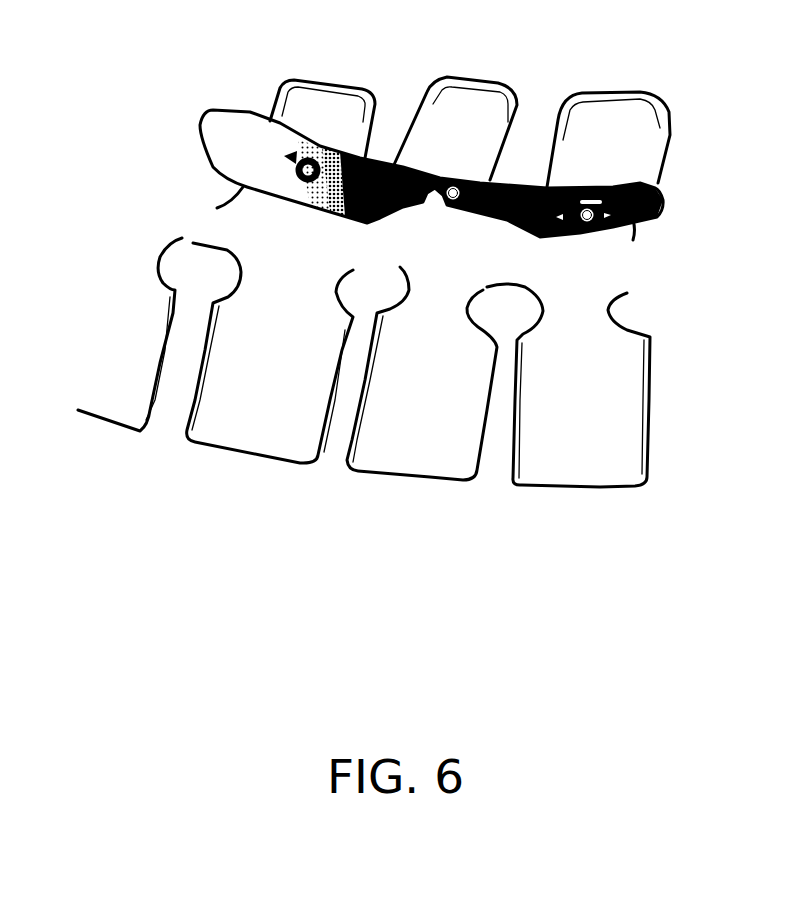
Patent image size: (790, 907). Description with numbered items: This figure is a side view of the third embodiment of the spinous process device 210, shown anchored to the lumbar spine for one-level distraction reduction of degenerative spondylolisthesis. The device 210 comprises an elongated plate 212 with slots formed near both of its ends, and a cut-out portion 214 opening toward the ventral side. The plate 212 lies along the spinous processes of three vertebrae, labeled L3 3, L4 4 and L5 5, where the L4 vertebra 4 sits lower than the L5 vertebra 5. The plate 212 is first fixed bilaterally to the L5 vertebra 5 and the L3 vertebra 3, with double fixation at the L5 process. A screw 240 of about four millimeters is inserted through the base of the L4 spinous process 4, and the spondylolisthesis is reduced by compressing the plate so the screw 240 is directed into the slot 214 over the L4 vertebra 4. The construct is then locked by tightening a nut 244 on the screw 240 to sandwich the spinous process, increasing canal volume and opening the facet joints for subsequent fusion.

The spinous process device 210 is at (363, 164).
The plate 212 is at (225, 140).
The cut-out portion 214 is at (528, 232).
The screw 240 is at (291, 160).
The nut 244 is at (308, 184).
The L3 vertebra 3 is at (274, 408).
The L4 vertebra 4 is at (433, 431).
The L5 vertebra 5 is at (590, 441).